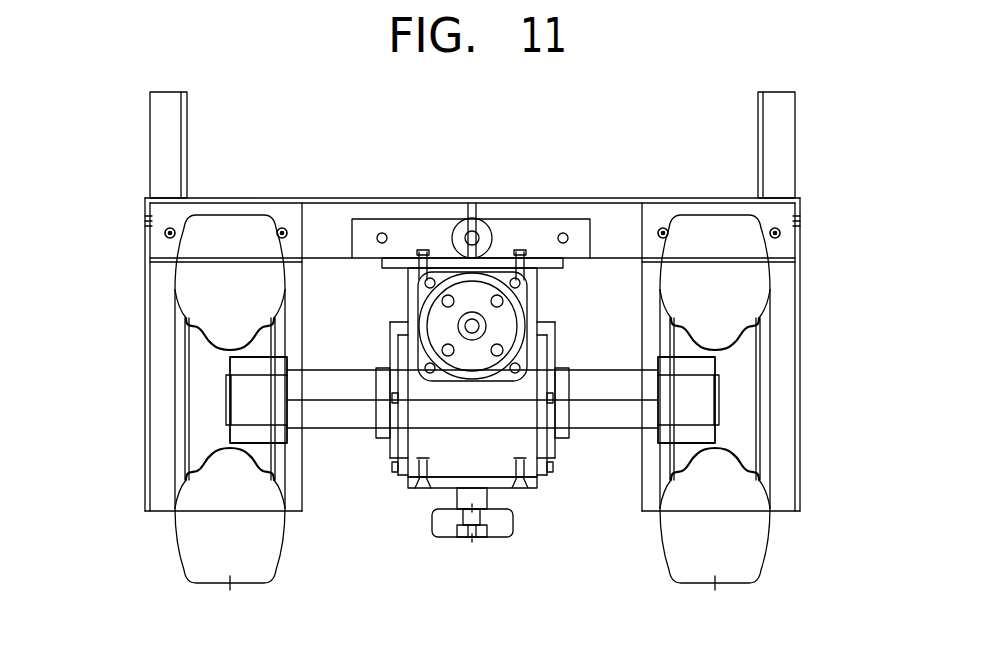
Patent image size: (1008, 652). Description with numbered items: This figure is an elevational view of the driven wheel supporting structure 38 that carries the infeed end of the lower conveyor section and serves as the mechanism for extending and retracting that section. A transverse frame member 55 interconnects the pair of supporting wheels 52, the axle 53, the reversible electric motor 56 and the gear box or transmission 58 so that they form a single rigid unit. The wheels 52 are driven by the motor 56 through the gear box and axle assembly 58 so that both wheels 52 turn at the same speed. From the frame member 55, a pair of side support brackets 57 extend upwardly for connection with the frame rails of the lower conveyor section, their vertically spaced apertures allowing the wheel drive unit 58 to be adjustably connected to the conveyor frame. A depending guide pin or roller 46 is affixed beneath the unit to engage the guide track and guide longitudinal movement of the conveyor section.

The driven wheeled supporting structure 38 is at (146, 358).
The guide pin or roller 46 is at (500, 532).
The supporting wheels 52 is at (200, 556).
The axle 53 is at (596, 402).
The transverse frame member 55 is at (612, 220).
The reversible electric motor 56 is at (503, 314).
The side support brackets 57 is at (172, 122).
The gear box and axle assembly 58 is at (479, 407).